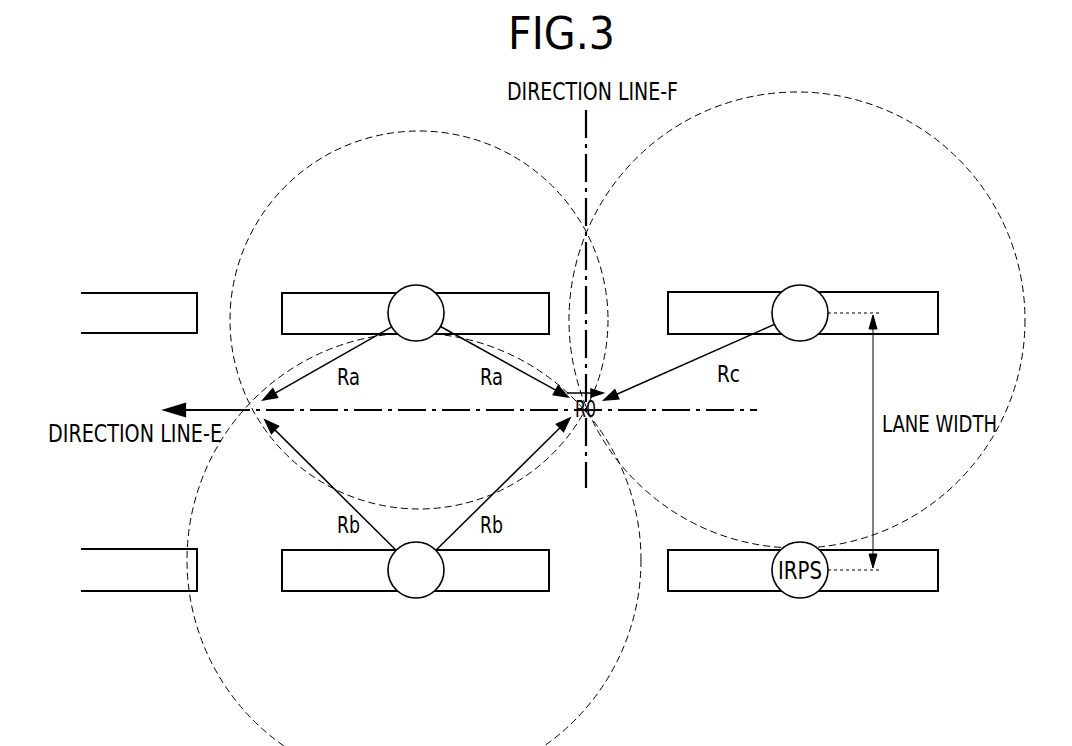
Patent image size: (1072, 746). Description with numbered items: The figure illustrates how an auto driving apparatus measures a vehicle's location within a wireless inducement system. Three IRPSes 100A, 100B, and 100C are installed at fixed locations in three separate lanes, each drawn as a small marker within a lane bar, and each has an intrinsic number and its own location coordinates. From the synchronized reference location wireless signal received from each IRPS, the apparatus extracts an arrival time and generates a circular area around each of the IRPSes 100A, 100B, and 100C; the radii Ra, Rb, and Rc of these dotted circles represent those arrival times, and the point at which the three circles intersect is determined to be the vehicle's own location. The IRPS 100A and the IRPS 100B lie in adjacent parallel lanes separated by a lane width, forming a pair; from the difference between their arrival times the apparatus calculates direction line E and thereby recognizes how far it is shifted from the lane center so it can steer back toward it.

The IRPS 100A is at (416, 285).
The IRPS 100B is at (416, 598).
The IRPS 100C is at (800, 285).